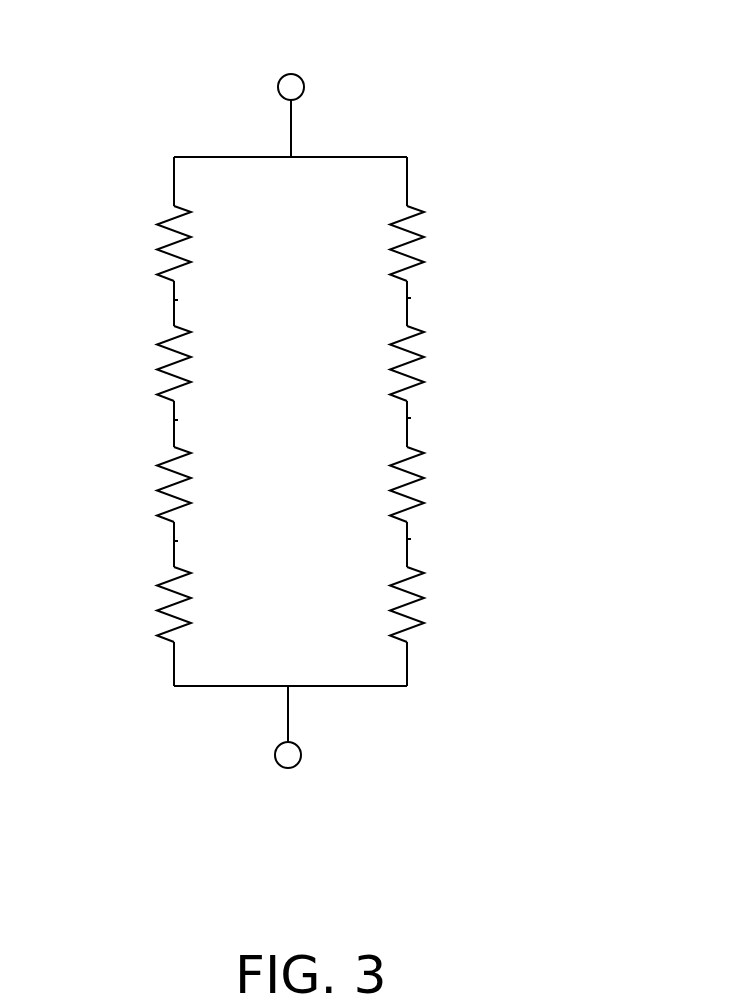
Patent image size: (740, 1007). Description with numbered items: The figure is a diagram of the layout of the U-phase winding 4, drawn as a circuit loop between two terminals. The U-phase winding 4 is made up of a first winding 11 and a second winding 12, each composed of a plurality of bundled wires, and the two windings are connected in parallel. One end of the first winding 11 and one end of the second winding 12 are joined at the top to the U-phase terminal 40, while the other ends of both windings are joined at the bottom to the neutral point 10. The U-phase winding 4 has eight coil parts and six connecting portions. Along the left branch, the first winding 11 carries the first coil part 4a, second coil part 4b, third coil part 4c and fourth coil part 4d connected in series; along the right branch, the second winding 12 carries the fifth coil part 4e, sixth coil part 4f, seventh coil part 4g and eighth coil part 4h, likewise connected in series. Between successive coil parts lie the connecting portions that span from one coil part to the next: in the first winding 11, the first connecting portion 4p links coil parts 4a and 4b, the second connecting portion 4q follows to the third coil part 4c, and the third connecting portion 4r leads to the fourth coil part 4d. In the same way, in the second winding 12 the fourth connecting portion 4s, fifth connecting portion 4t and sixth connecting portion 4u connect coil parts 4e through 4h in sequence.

The U-phase winding 4 is at (379, 108).
The neutral point 10 is at (275, 753).
The first winding 11 is at (176, 178).
The second winding 12 is at (407, 178).
The U-phase terminal 40 is at (280, 87).
The first coil part 4a is at (170, 233).
The second coil part 4b is at (170, 353).
The third coil part 4c is at (170, 473).
The fourth coil part 4d is at (170, 593).
The fifth coil part 4e is at (399, 230).
The sixth coil part 4f is at (399, 350).
The seventh coil part 4g is at (400, 472).
The eighth coil part 4h is at (399, 590).
The first connecting portion 4p is at (178, 300).
The second connecting portion 4q is at (178, 420).
The third connecting portion 4r is at (178, 541).
The fourth connecting portion 4s is at (411, 298).
The fifth connecting portion 4t is at (411, 418).
The sixth connecting portion 4u is at (411, 539).